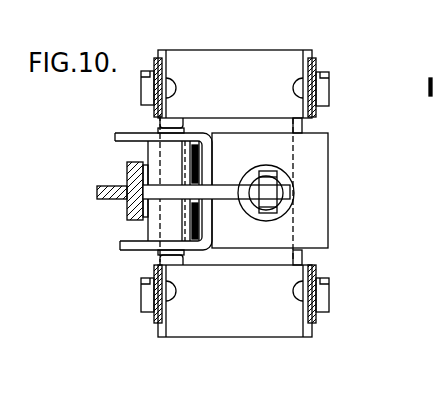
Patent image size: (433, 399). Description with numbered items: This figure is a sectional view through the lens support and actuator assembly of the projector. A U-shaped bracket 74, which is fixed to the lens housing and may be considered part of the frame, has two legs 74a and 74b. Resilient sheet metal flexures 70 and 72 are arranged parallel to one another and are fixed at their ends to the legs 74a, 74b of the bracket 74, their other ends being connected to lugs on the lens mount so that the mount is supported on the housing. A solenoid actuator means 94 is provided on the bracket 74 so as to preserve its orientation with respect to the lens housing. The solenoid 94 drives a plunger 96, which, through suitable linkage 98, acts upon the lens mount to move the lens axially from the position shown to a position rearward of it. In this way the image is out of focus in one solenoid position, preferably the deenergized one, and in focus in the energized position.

The flexure 70 is at (314, 64).
The flexure 72 is at (155, 60).
The U-shaped bracket 74 is at (265, 329).
The leg of U-shaped bracket 74a is at (305, 338).
The leg of U-shaped bracket 74b is at (163, 338).
The solenoid actuator means 94 is at (317, 165).
The plunger 96 is at (255, 209).
The linkage 98 is at (221, 187).